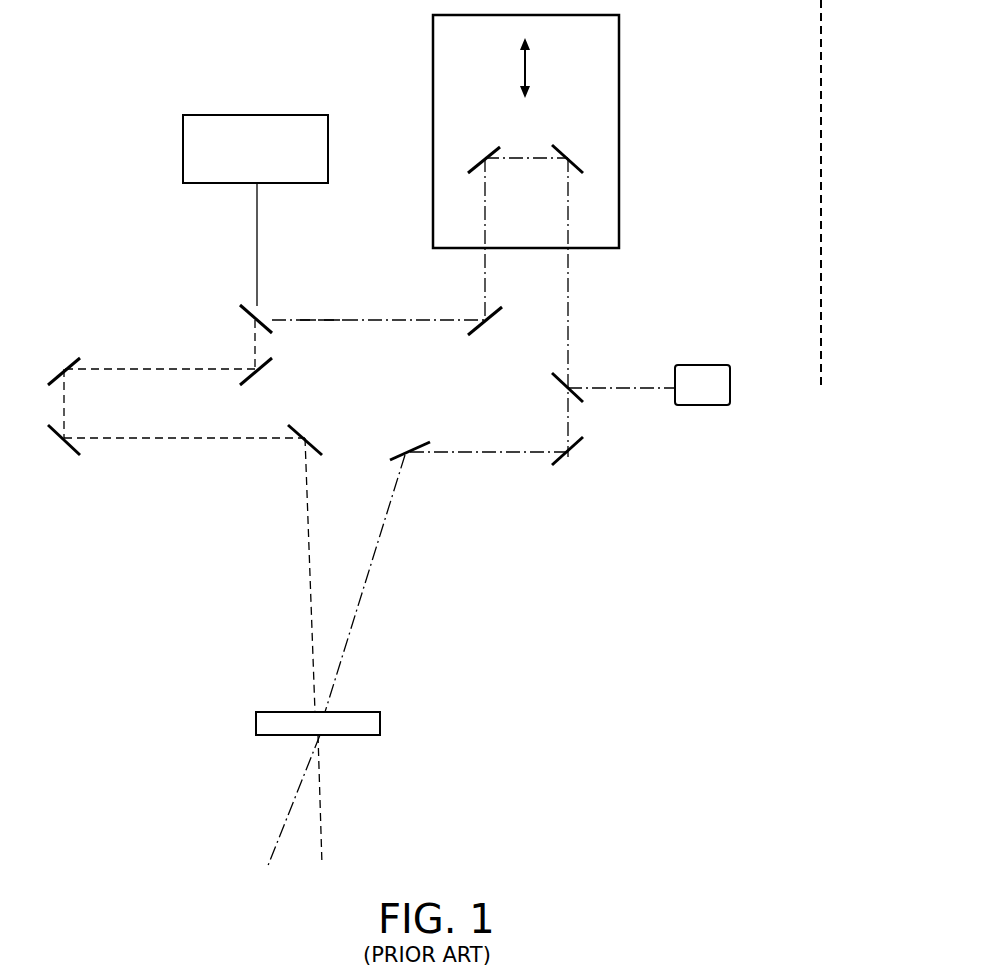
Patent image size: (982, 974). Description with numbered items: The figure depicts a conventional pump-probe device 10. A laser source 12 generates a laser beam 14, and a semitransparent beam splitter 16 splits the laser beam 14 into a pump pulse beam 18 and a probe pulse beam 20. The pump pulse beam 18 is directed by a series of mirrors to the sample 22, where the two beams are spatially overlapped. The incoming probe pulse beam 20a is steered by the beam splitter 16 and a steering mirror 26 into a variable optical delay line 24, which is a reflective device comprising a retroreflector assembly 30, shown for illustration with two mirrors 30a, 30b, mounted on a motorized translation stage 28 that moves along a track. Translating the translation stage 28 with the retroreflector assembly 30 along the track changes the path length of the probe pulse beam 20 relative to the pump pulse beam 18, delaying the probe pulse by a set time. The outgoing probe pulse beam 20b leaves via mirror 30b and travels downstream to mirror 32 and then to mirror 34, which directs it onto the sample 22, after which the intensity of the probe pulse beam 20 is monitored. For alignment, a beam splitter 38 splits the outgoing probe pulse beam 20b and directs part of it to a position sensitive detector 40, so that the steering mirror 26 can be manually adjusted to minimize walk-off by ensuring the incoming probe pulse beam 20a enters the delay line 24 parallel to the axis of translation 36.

The pump-probe device 10 is at (163, 92).
The laser source 12 is at (183, 149).
The laser beam 14 is at (255, 252).
The semitransparent beam splitter 16 is at (240, 312).
The pump pulse beam 18 is at (312, 650).
The probe pulse beam 20 is at (374, 318).
The incoming probe pulse beam 20a is at (322, 323).
The outgoing probe pulse beam 20b is at (570, 305).
The sample 22 is at (256, 718).
The variable optical delay line 24 is at (641, 222).
The steering mirror 26 is at (480, 332).
The motorized translation stage 28 is at (619, 133).
The retroreflector assembly 30 is at (456, 126).
The retroreflector mirror 30a is at (490, 148).
The retroreflector mirror 30b is at (568, 148).
The mirror 32 is at (562, 460).
The mirror 34 is at (422, 446).
The axis of translation 36 is at (820, 185).
The beam splitter (mirror) 38 is at (554, 379).
The position sensitive detector 40 is at (730, 385).